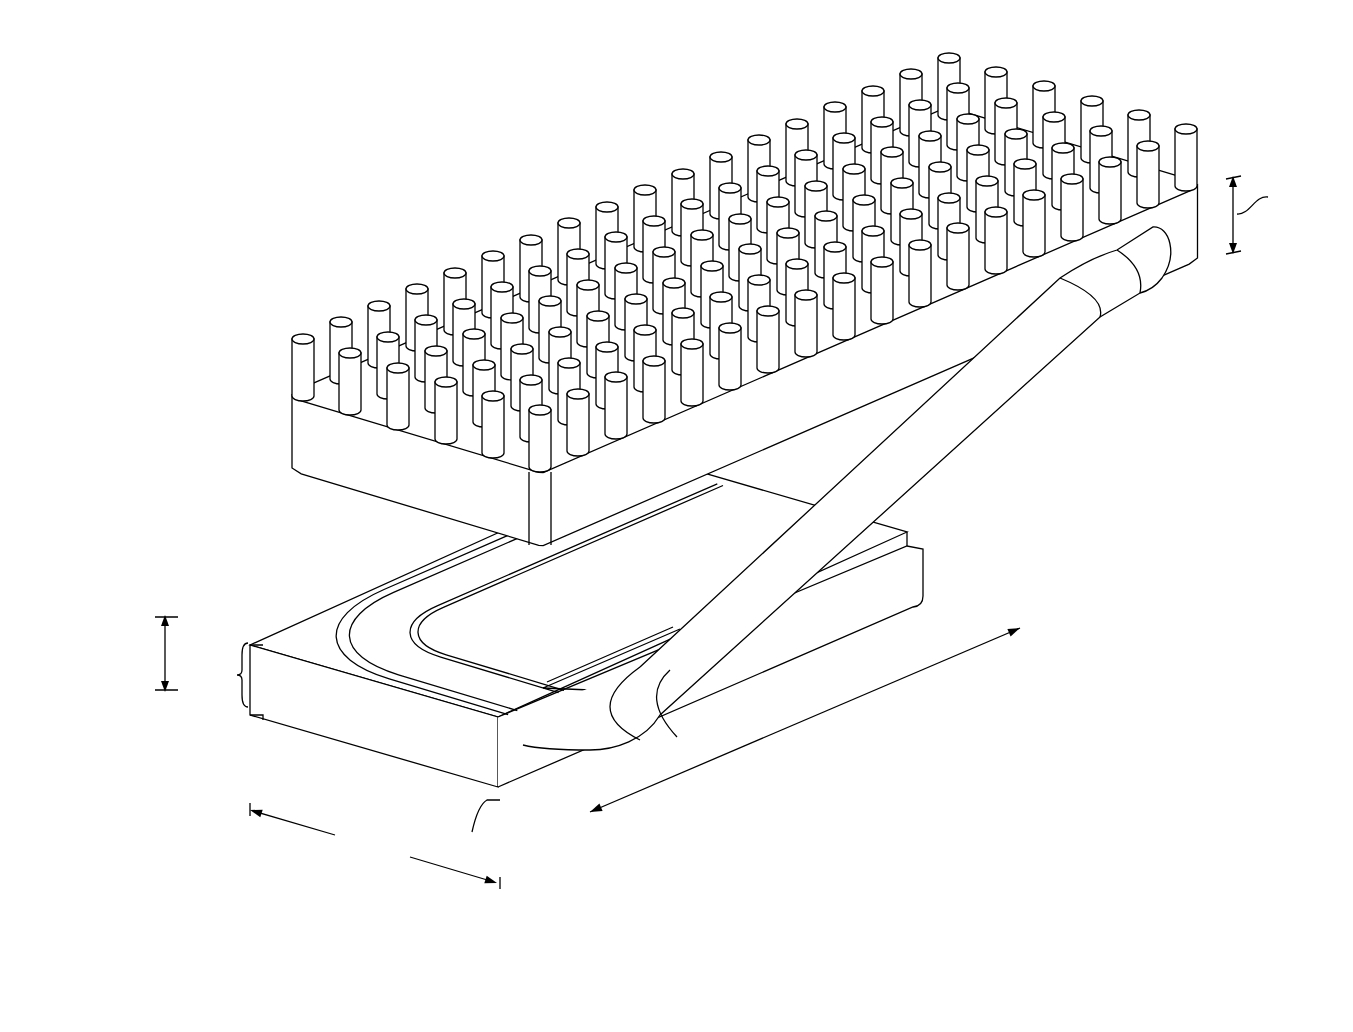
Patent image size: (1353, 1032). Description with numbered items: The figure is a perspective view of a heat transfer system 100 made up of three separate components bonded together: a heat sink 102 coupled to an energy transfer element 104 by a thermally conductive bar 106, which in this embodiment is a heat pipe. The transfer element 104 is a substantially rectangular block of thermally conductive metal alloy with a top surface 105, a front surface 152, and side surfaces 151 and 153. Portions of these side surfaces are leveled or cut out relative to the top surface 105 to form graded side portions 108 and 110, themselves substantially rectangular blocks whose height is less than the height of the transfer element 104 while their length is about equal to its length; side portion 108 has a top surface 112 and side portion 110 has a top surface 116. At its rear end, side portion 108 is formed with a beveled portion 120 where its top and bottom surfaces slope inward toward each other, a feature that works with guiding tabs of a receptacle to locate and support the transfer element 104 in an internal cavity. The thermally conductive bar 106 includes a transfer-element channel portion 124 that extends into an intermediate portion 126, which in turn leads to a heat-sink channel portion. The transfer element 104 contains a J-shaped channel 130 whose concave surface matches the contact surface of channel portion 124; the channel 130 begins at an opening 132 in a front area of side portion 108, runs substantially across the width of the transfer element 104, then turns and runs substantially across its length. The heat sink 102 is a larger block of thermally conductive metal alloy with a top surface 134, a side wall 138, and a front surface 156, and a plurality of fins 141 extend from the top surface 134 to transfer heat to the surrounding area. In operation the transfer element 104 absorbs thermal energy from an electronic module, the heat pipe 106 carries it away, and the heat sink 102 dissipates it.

The heat transfer system 100 is at (272, 166).
The heat sink 102 is at (693, 299).
The energy transfer element 104 is at (583, 623).
The top surface 105 is at (628, 609).
The thermally conductive bar 106 is at (757, 299).
The graded side portion 108 is at (905, 586).
The graded side portion 110 is at (360, 600).
The top surface 112 is at (905, 535).
The top surface 116 is at (533, 591).
The beveled portion 120 is at (643, 588).
The transfer-element channel portion 124 is at (397, 652).
The intermediate portion 126 is at (839, 547).
The channel 130 is at (494, 683).
The opening 132 is at (514, 766).
The top surface 134 is at (330, 366).
The side wall 138 is at (745, 327).
The fins 141 is at (744, 262).
The side surface 151 is at (833, 634).
The front surface 152 is at (400, 730).
The side surface 153 is at (311, 596).
The front surface 156 is at (425, 482).